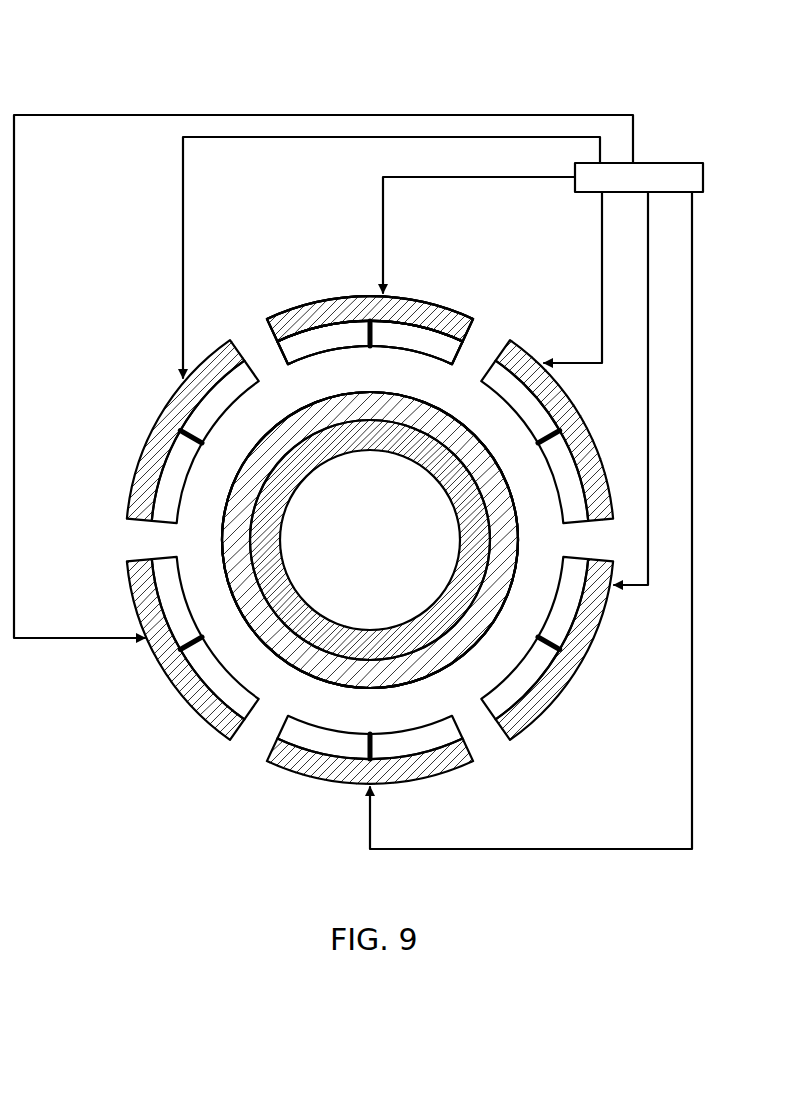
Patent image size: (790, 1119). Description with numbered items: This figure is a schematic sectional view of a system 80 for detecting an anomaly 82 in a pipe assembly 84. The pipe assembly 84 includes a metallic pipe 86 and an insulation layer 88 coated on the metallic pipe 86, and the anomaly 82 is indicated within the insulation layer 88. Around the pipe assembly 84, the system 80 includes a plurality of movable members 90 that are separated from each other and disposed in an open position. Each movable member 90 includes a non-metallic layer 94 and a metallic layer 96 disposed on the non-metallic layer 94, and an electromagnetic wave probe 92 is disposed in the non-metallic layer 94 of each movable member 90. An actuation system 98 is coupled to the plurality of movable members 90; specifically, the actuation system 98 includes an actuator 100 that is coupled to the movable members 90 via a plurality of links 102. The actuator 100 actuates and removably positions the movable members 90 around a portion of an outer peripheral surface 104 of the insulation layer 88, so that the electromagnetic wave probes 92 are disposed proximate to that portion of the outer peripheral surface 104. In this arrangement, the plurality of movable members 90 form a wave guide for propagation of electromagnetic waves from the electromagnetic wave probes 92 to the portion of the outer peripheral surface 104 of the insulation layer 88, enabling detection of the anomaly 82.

The system 80 is at (213, 764).
The anomaly 82 is at (498, 480).
The pipe assembly 84 is at (213, 548).
The metallic pipe 86 is at (340, 630).
The insulation layer 88 is at (306, 668).
The movable members 90 is at (478, 307).
The electromagnetic wave probe 92 is at (368, 338).
The non-metallic layer 94 is at (415, 342).
The metallic layer 96 is at (440, 302).
The actuation system 98 is at (619, 56).
The actuator 100 is at (688, 163).
The links 102 is at (108, 116).
The outer peripheral surface 104 is at (302, 398).